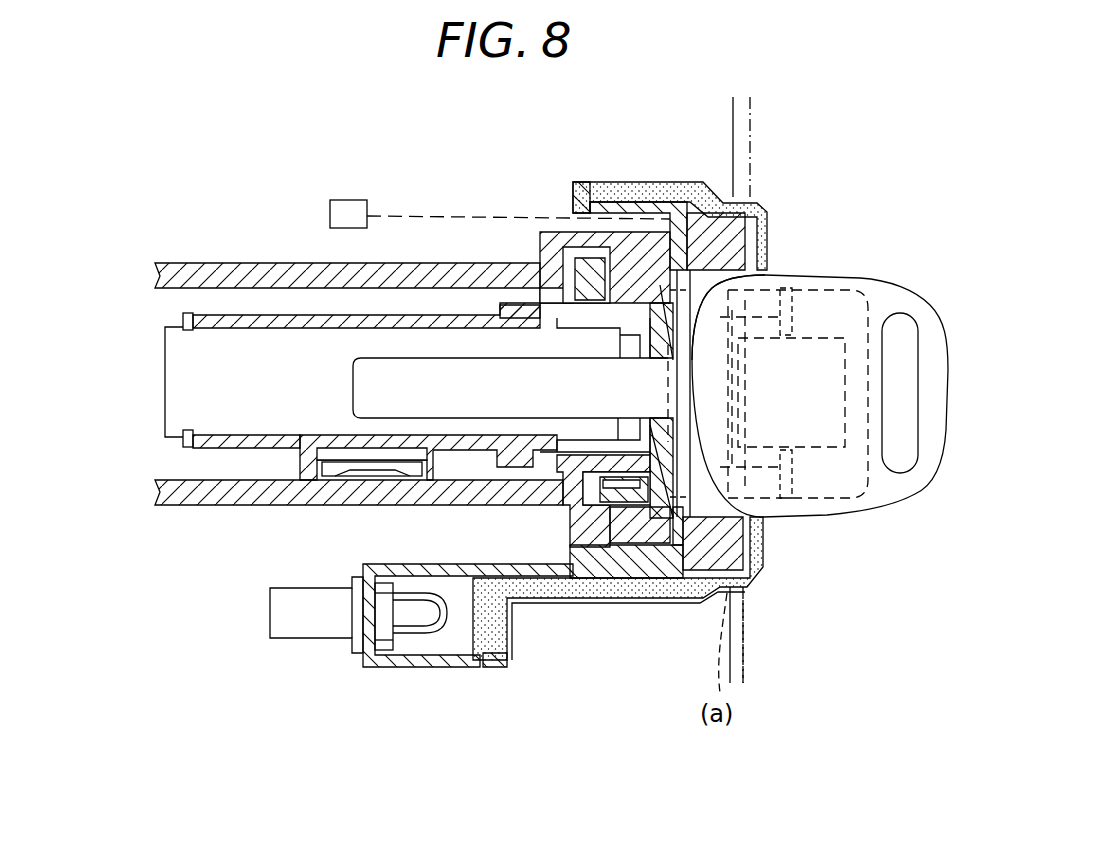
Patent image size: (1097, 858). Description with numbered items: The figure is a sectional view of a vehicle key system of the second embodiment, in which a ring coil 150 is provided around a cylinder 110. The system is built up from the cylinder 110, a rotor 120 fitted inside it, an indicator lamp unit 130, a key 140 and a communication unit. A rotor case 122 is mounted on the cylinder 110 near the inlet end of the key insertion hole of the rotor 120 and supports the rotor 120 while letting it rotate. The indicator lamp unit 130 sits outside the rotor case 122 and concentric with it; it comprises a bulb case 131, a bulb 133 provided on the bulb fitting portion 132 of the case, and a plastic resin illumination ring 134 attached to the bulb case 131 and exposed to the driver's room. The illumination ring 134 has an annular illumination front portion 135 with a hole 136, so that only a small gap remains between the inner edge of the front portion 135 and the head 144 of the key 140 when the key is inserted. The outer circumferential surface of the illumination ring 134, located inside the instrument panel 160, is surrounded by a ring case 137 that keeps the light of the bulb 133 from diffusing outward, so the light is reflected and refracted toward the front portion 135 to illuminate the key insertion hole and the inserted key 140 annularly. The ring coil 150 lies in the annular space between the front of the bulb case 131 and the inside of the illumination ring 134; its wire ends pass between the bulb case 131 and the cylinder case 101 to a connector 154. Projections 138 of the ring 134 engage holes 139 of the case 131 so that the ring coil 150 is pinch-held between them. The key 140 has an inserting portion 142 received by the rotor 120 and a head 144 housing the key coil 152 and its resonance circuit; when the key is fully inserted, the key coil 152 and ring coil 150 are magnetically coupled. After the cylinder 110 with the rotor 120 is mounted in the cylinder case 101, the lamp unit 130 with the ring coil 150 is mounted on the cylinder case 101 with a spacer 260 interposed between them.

The cylinder case 101 is at (284, 262).
The cylinder 110 is at (228, 315).
The rotor 120 is at (163, 411).
The rotor case 122 is at (577, 282).
The indicator lamp unit 130 is at (424, 670).
The bulb case 131 is at (430, 565).
The bulb fitting portion 132 is at (457, 652).
The bulb 133 is at (388, 622).
The illumination ring 134 is at (582, 590).
The annular illumination front portion 135 is at (766, 556).
The hole 136 is at (766, 519).
The ring case 137 is at (612, 602).
The projections 138 is at (590, 195).
The holes 139 is at (598, 192).
The key 140 is at (918, 290).
The inserting portion 142 is at (353, 384).
The head 144 is at (878, 490).
The ring coil 150 is at (753, 212).
The key coil 152 is at (768, 290).
The connector 154 is at (345, 200).
The instrument panel 160 is at (745, 657).
The spacer 260 is at (652, 540).